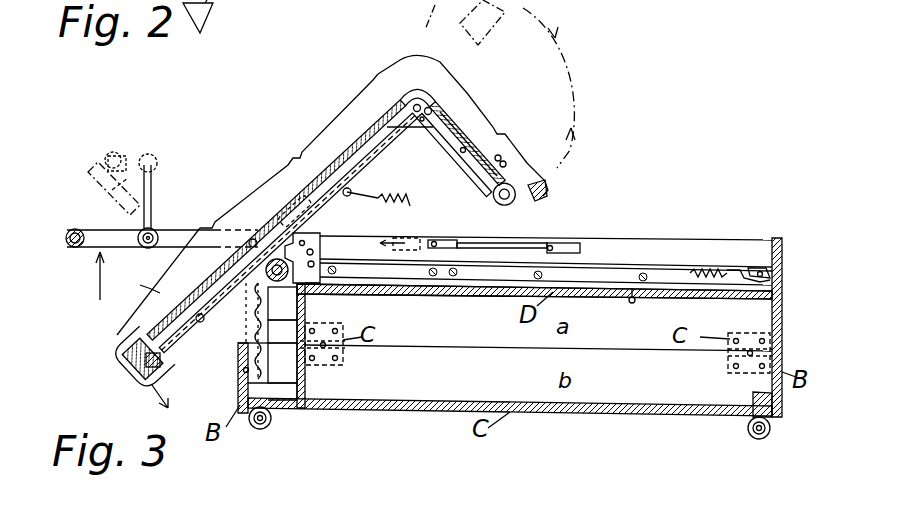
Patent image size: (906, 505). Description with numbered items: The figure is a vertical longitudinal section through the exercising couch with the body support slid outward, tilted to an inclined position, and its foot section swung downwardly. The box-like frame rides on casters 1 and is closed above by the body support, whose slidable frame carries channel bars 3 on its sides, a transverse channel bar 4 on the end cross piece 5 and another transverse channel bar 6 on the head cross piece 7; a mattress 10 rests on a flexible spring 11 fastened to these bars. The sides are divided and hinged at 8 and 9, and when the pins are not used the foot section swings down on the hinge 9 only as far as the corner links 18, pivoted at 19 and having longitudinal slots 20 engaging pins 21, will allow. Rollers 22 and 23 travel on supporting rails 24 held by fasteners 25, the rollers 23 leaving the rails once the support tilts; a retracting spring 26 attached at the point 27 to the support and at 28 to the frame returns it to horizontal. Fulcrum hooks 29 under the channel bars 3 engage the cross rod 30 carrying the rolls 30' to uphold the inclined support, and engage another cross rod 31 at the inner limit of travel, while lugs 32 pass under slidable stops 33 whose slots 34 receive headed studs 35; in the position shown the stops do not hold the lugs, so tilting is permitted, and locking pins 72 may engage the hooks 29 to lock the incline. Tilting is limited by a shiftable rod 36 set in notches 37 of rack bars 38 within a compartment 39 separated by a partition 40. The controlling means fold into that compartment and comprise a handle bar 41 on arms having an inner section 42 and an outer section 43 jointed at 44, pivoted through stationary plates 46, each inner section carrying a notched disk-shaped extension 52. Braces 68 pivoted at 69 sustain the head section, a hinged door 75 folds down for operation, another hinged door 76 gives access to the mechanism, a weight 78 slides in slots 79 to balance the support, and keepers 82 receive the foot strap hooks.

The casters 1 is at (272, 425).
The channel bars 3 is at (353, 153).
The transverse channel bar 4 is at (487, 38).
The end cross piece 5 is at (538, 199).
The transverse channel bar 6 is at (123, 167).
The head cross piece 7 is at (108, 164).
The hinge 8 is at (246, 243).
The hinge 9 is at (410, 140).
The mattress 10 is at (500, 137).
The flexible spring 11 is at (455, 121).
The corner links 18 is at (431, 127).
The pivot 19 is at (463, 152).
The longitudinal slots 20 is at (326, 212).
The pins 21 is at (420, 86).
The rollers 22 is at (306, 212).
The rollers 23 is at (503, 206).
The supporting rails 24 is at (613, 270).
The fasteners 25 is at (643, 281).
The retracting spring 26 is at (400, 212).
The attachment point 27 is at (351, 193).
The attachment point 28 is at (773, 285).
The fulcrum hooks 29 is at (284, 304).
The cross rod 30 is at (239, 256).
The rolls 30' is at (332, 303).
The cross rod 31 is at (443, 278).
The lugs 32 is at (345, 133).
The slidable stops 33 is at (507, 249).
The longitudinal slots 34 is at (442, 243).
The headed studs 35 is at (438, 242).
The shiftable rod 36 is at (205, 318).
The notches 37 is at (256, 330).
The rack bars 38 is at (258, 332).
The compartment 39 is at (274, 371).
The partition 40 is at (305, 383).
The handle bar 41 is at (70, 246).
The inner section 42 is at (180, 235).
The outer section 43 is at (93, 228).
The pivotal connection 44 is at (157, 196).
The stationary plates 46 is at (360, 292).
The disk-shaped extension 52 is at (148, 249).
The braces 68 is at (128, 276).
The pivot 69 is at (255, 350).
The locking pins 72 is at (322, 243).
The hinged door 75 is at (240, 383).
The hinged door 76 is at (783, 305).
The weight 78 is at (174, 391).
The slots 79 is at (238, 372).
The keepers 82 is at (501, 157).